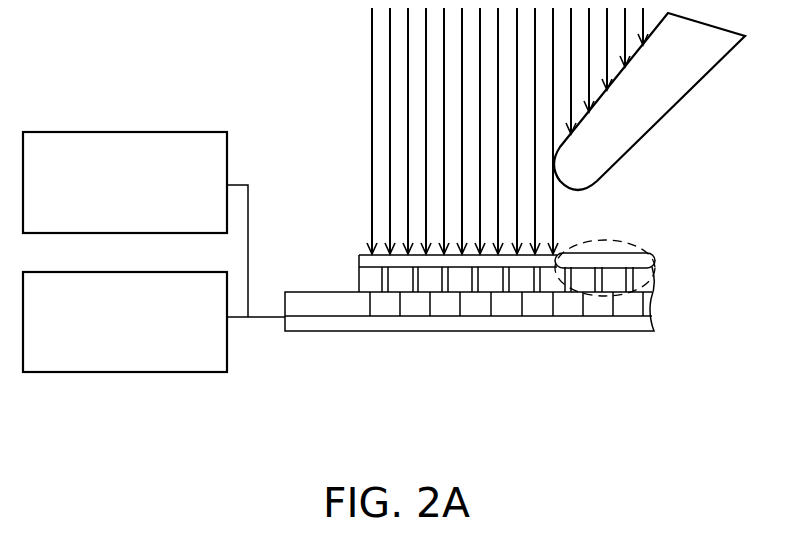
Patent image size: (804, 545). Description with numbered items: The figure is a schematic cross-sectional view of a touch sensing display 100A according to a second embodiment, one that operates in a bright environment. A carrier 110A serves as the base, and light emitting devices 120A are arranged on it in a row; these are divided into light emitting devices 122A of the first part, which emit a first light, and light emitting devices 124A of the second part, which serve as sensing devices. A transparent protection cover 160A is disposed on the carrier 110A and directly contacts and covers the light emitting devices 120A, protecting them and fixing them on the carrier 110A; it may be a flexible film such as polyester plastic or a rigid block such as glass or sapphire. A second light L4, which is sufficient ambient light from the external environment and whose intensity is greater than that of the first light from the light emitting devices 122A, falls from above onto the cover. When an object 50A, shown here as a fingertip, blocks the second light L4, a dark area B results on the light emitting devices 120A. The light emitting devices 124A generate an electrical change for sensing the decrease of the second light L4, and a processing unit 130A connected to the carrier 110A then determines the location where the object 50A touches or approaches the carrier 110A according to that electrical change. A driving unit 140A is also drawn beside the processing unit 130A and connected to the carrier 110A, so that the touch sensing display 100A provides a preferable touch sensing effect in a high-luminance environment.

The touch sensing display 100A is at (745, 387).
The carrier 110A is at (320, 325).
The light emitting devices 120A is at (504, 338).
The light emitting devices of the first part 122A is at (577, 285).
The light emitting devices of the second part 124A is at (612, 285).
The processing unit 130A is at (133, 360).
The driving unit 140A is at (143, 150).
The transparent protection cover 160A is at (358, 262).
The object 50A is at (660, 115).
The second light L4 is at (345, 67).
The dark area B is at (640, 243).